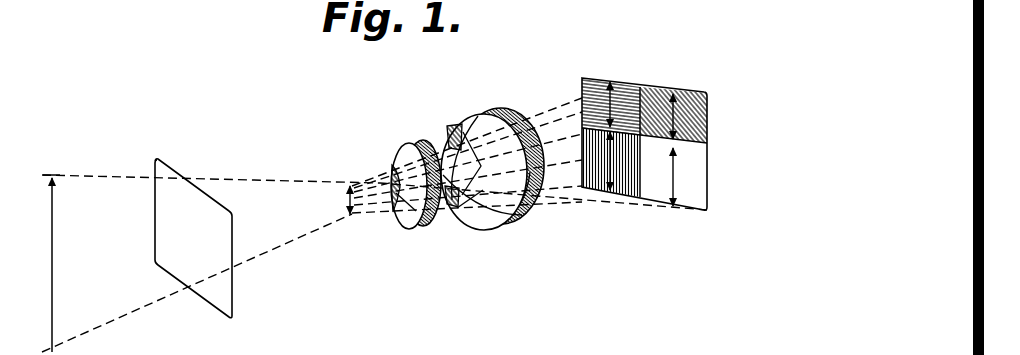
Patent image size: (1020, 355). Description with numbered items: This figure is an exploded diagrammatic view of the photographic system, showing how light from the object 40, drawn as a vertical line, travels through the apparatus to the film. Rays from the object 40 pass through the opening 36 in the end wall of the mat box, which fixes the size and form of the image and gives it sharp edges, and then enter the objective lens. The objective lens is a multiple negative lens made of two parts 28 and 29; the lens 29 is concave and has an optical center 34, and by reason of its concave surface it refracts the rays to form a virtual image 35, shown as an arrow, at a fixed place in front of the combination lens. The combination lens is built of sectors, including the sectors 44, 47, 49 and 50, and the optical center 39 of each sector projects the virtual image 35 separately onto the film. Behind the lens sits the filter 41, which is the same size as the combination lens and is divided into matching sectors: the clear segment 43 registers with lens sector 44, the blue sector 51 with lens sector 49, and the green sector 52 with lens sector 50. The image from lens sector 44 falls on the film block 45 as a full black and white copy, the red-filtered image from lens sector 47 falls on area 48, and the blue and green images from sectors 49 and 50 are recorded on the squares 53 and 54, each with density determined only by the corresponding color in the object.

The lens part 28 is at (497, 162).
The concave lens 29 is at (394, 160).
The optical center 34 is at (411, 214).
The virtual image 35 is at (349, 203).
The opening 36 is at (206, 193).
The optical center 39 is at (460, 152).
The object 40 is at (53, 258).
The filter 41 is at (527, 116).
The filter segment 43 is at (528, 205).
The lens sector 44 is at (502, 212).
The film block 45 is at (646, 146).
The lens sector 47 is at (480, 222).
The film sector 48 is at (601, 188).
The lens sector 49 is at (457, 121).
The lens sector 50 is at (498, 113).
The filter sector 51 is at (487, 111).
The filter sector 52 is at (534, 133).
The film square 53 is at (613, 85).
The film square 54 is at (678, 96).